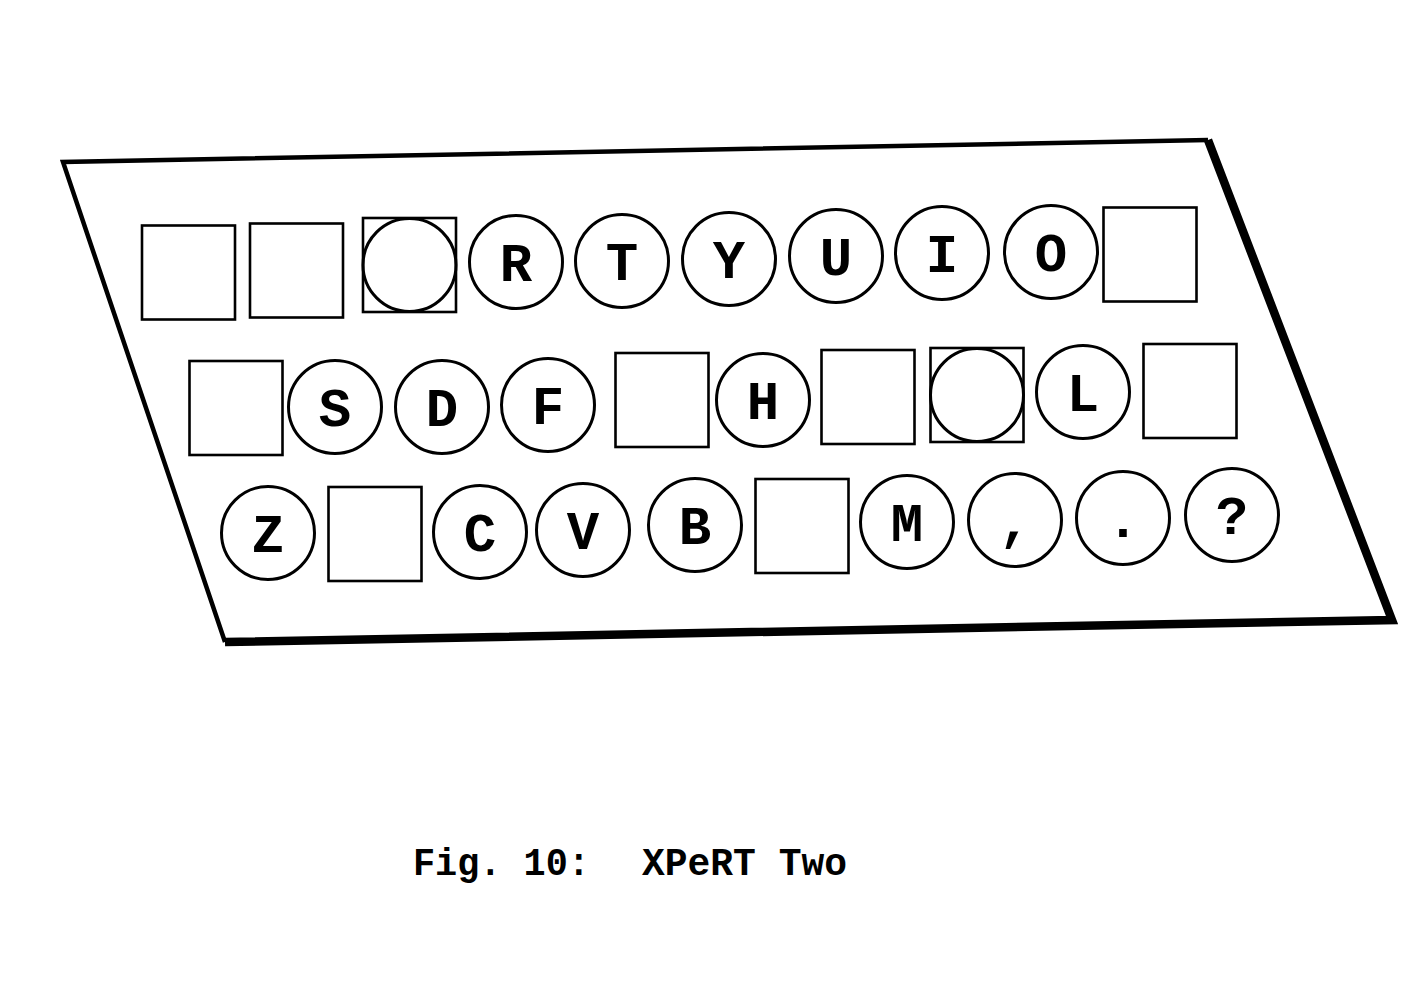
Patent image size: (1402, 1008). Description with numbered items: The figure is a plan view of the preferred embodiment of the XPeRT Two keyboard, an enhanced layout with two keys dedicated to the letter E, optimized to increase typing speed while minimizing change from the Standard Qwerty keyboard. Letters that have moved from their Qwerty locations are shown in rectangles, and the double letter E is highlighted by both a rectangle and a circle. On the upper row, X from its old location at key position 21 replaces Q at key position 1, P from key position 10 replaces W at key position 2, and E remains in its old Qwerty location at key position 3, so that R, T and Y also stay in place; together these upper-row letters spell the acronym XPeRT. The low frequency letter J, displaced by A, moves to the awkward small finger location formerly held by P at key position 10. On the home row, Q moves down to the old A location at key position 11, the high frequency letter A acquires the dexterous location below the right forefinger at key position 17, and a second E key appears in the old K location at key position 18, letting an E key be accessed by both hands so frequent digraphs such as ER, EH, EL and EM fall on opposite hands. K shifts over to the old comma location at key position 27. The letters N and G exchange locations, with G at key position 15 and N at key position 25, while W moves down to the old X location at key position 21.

The key position 1 is at (194, 220).
The key position 2 is at (285, 218).
The key position 3 is at (408, 220).
The key position 10 is at (1154, 203).
The key position 11 is at (216, 455).
The key position 15 is at (643, 447).
The key position 17 is at (858, 443).
The key position 18 is at (964, 442).
The key position 21 is at (369, 580).
The key position 25 is at (797, 573).
The key position 27 is at (1179, 438).